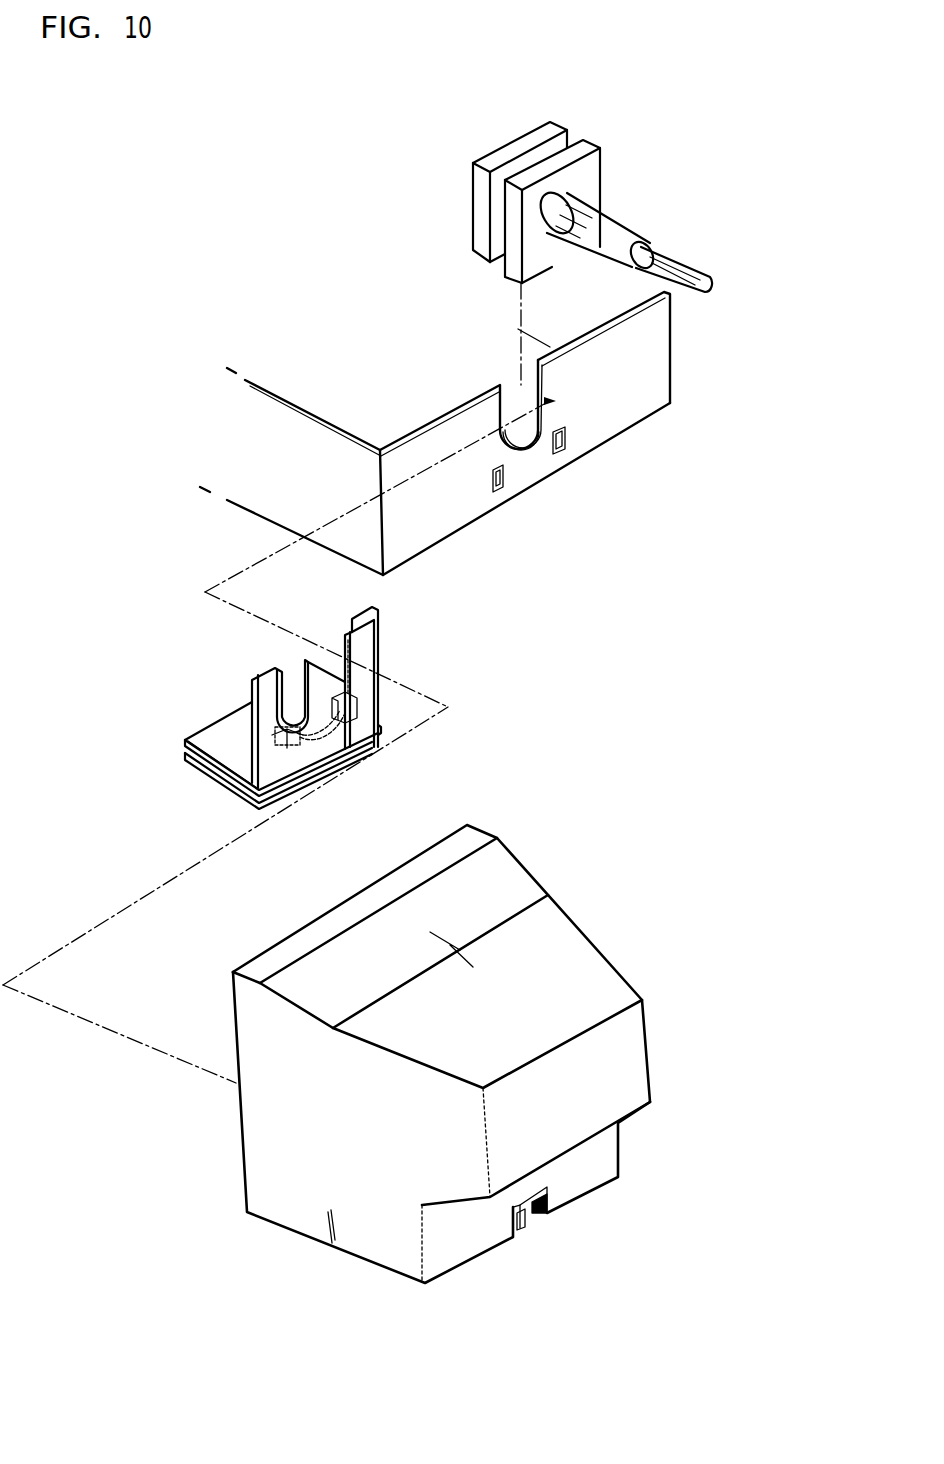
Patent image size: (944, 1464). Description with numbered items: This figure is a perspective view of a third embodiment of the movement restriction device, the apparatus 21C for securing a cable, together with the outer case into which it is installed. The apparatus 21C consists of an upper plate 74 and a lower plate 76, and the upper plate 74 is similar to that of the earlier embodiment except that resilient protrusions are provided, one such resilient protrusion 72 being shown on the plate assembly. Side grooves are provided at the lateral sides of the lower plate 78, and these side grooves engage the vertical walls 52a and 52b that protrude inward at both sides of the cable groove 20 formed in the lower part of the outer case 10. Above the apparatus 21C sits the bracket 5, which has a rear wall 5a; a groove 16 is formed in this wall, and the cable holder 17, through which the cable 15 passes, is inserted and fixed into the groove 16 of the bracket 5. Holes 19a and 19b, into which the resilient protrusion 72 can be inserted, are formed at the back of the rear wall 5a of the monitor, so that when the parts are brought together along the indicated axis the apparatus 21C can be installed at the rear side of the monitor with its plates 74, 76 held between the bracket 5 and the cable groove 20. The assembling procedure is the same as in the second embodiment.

The bracket 5 is at (480, 424).
The rear wall 5a is at (645, 388).
The lower case (housing) 10 is at (484, 1083).
The cable 15 is at (690, 273).
The groove 16 is at (525, 449).
The cable holder 17 is at (620, 192).
The hole 19a is at (495, 493).
The hole 19b is at (559, 454).
The cable groove 20 is at (619, 1244).
The apparatus for securing the cable 21C is at (381, 642).
The vertical wall 52a is at (546, 1216).
The vertical wall 52b is at (527, 1225).
The resilient protrusion 72 is at (380, 697).
The upper plate 74 is at (282, 750).
The lower plate 76 is at (227, 780).
The lower plate 78 is at (218, 738).